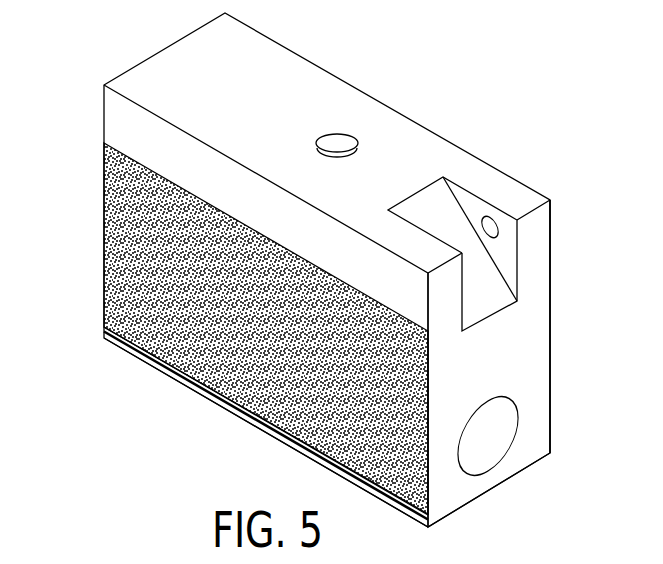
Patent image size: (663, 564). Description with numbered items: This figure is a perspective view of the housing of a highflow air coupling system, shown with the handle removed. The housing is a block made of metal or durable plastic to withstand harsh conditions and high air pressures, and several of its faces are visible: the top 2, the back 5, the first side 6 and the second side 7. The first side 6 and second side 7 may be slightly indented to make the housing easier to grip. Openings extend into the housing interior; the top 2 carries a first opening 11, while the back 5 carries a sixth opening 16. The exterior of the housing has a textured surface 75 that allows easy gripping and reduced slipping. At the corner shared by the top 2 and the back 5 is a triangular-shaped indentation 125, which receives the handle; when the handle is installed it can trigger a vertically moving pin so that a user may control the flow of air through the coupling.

The top 2 is at (400, 130).
The back 5 is at (521, 355).
The first side 6 is at (107, 192).
The second side 7 is at (550, 293).
The first opening 11 is at (336, 136).
The sixth opening 16 is at (488, 437).
The textured surface 75 is at (219, 364).
The triangular-shaped indentation 125 is at (440, 213).